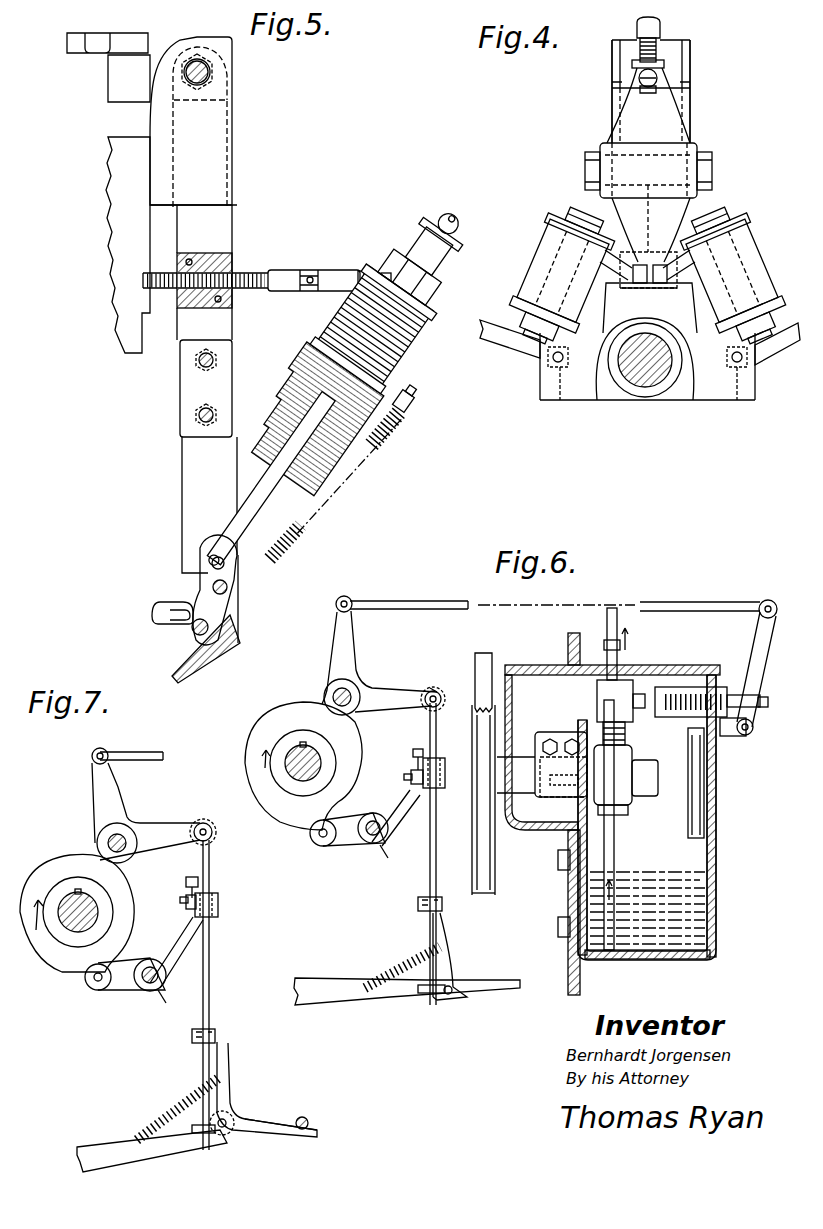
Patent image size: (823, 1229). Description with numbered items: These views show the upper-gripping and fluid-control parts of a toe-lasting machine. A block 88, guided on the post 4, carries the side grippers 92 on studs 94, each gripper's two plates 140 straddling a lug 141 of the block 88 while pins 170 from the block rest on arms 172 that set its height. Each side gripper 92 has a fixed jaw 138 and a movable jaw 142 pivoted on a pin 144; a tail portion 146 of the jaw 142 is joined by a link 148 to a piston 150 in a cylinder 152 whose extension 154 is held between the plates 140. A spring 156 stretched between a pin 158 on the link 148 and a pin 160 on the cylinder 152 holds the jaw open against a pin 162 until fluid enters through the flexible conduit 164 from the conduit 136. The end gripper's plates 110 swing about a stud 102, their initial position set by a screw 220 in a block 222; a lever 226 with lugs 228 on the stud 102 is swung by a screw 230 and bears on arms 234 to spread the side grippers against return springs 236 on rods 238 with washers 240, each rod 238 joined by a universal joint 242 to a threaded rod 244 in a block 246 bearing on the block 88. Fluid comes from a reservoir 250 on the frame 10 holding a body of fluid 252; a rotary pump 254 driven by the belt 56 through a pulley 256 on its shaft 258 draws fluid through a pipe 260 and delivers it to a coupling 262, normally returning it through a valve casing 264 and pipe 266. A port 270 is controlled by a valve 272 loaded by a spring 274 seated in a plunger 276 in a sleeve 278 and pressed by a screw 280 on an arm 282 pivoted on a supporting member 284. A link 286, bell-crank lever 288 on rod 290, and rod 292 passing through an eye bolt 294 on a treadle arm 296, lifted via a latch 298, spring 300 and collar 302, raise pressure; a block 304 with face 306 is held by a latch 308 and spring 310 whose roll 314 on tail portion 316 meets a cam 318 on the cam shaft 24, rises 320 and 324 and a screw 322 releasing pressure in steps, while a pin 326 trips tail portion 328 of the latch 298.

In FIG. 4, the rod or post 4 is at (642, 380).
In FIG. 6, the main frame 10 is at (580, 972).
In FIG. 6, the cam shaft 24 is at (316, 760).
In FIG. 7, the cam shaft 24 is at (92, 904).
In FIG. 6, the belt 56 is at (491, 868).
In FIG. 5, the block 88 is at (110, 165).
In FIG. 4, the block 88 is at (696, 398).
In FIG. 5, the side grippers 92 is at (242, 636).
In FIG. 5, the studs 94 is at (205, 72).
In FIG. 4, the studs 94 is at (548, 266).
In FIG. 4, the stud 102 is at (645, 218).
In FIG. 4, the plates 110 is at (614, 62).
In FIG. 6, the conduit 136 is at (607, 622).
In FIG. 5, the jaw 138 is at (212, 660).
In FIG. 5, the plates 140 is at (183, 472).
In FIG. 4, the plates 140 is at (548, 238).
In FIG. 5, the lug 141 is at (215, 115).
In FIG. 4, the lug 141 is at (540, 258).
In FIG. 5, the jaw 142 is at (156, 607).
In FIG. 5, the pin 144 is at (194, 632).
In FIG. 5, the tail portion 146 is at (200, 578).
In FIG. 5, the link 148 is at (262, 497).
In FIG. 5, the piston 150 is at (300, 383).
In FIG. 5, the cylinder 152 is at (345, 338).
In FIG. 5, the extension 154 is at (238, 362).
In FIG. 5, the spring 156 is at (402, 418).
In FIG. 5, the pin 158 is at (270, 558).
In FIG. 5, the pin 160 is at (398, 392).
In FIG. 5, the pin 162 is at (228, 588).
In FIG. 5, the flexible conduit 164 is at (462, 232).
In FIG. 4, the pins 170 is at (560, 398).
In FIG. 4, the arms 172 is at (510, 340).
In FIG. 4, the screw 220 is at (652, 24).
In FIG. 4, the block 222 is at (668, 48).
In FIG. 4, the lever 226 is at (668, 115).
In FIG. 4, the lugs 228 is at (604, 146).
In FIG. 4, the screw 230 is at (658, 78).
In FIG. 4, the arms 234 is at (668, 290).
In FIG. 5, the return spring 236 is at (373, 275).
In FIG. 5, the rod 238 is at (386, 273).
In FIG. 5, the washer 240 is at (361, 271).
In FIG. 5, the universal joint 242 is at (310, 272).
In FIG. 5, the rod 244 is at (240, 273).
In FIG. 5, the block 246 is at (215, 255).
In FIG. 6, the reservoir 250 is at (716, 820).
In FIG. 6, the body of fluid 252 is at (716, 895).
In FIG. 6, the rotary pump 254 is at (620, 805).
In FIG. 6, the pulley 256 is at (494, 840).
In FIG. 6, the shaft 258 is at (530, 776).
In FIG. 6, the pipe 260 is at (614, 857).
In FIG. 6, the coupling 262 is at (597, 701).
In FIG. 6, the valve casing 264 is at (680, 690).
In FIG. 6, the pipe 266 is at (700, 786).
In FIG. 6, the port 270 is at (631, 733).
In FIG. 6, the valve 272 is at (648, 767).
In FIG. 6, the spring 274 is at (690, 688).
In FIG. 6, the plunger 276 is at (765, 700).
In FIG. 6, the sleeve 278 is at (735, 694).
In FIG. 6, the screw 280 is at (753, 720).
In FIG. 6, the arm 282 is at (768, 648).
In FIG. 6, the supporting member 284 is at (730, 736).
In FIG. 6, the link 286 is at (420, 601).
In FIG. 7, the link 286 is at (145, 748).
In FIG. 6, the bell-crank lever 288 is at (352, 630).
In FIG. 7, the bell-crank lever 288 is at (112, 771).
In FIG. 6, the rod 290 is at (332, 695).
In FIG. 7, the rod 290 is at (124, 836).
In FIG. 6, the rod 292 is at (437, 864).
In FIG. 7, the rod 292 is at (210, 965).
In FIG. 6, the eye bolt 294 is at (422, 994).
In FIG. 7, the eye bolt 294 is at (200, 1133).
In FIG. 6, the arm 296 is at (342, 1000).
In FIG. 7, the arm 296 is at (100, 1145).
In FIG. 6, the latch 298 is at (444, 930).
In FIG. 7, the latch 298 is at (229, 1053).
In FIG. 6, the spring 300 is at (415, 958).
In FIG. 7, the spring 300 is at (190, 1108).
In FIG. 6, the collar 302 is at (442, 904).
In FIG. 7, the collar 302 is at (216, 1032).
In FIG. 6, the block 304 is at (440, 762).
In FIG. 7, the block 304 is at (218, 898).
In FIG. 6, the front vertical face 306 is at (404, 777).
In FIG. 7, the front vertical face 306 is at (186, 902).
In FIG. 6, the latch 308 is at (411, 776).
In FIG. 7, the latch 308 is at (196, 930).
In FIG. 6, the spring 310 is at (388, 815).
In FIG. 7, the spring 310 is at (175, 943).
In FIG. 6, the roll 314 is at (325, 846).
In FIG. 7, the roll 314 is at (90, 988).
In FIG. 6, the tail portion 316 is at (365, 843).
In FIG. 7, the tail portion 316 is at (125, 990).
In FIG. 6, the cam 318 is at (282, 812).
In FIG. 7, the cam 318 is at (42, 955).
In FIG. 6, the rise 320 is at (355, 703).
In FIG. 7, the rise 320 is at (92, 855).
In FIG. 6, the screw 322 is at (420, 749).
In FIG. 7, the screw 322 is at (192, 877).
In FIG. 6, the rise 324 is at (284, 712).
In FIG. 7, the rise 324 is at (70, 862).
In FIG. 7, the pin 326 is at (307, 1120).
In FIG. 7, the tail portion 328 is at (275, 1135).